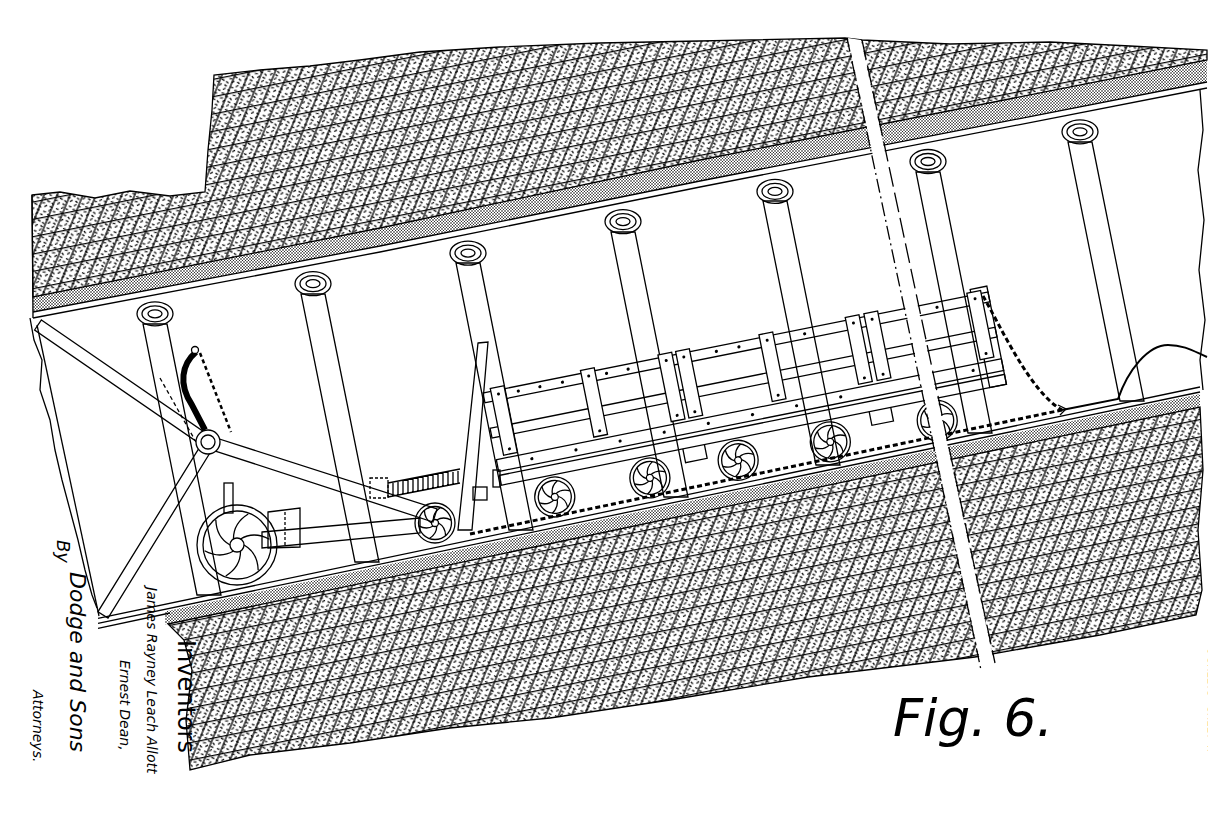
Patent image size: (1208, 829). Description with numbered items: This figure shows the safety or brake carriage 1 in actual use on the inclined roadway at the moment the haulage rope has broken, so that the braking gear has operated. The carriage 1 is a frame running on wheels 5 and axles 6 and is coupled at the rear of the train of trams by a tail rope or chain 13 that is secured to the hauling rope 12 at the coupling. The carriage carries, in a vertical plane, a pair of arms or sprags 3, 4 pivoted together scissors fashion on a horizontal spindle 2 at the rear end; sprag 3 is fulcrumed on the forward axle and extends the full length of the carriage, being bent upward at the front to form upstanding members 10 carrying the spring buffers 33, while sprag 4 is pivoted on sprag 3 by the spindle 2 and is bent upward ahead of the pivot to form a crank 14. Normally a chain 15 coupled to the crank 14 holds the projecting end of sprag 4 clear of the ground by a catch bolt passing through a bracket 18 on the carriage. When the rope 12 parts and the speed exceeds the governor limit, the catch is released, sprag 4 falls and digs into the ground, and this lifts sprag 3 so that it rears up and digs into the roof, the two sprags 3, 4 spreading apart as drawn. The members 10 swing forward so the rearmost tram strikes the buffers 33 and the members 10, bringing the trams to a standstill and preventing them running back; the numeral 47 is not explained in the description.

The safety or brake carriage 1 is at (316, 532).
The horizontal spindle 2 is at (193, 443).
The arm or sprag 3 is at (120, 380).
The arm or sprag 4 is at (143, 535).
The wheels 5 is at (202, 573).
The axles 6 is at (233, 493).
The upstanding members 10 is at (477, 408).
The hauling rope 12 is at (1170, 338).
The tail rope or chain 13 is at (612, 510).
The crank 14 is at (207, 367).
The chain 15 is at (226, 403).
The bracket 18 is at (268, 511).
The spring buffers 33 is at (487, 482).
The chain 47 is at (1073, 407).